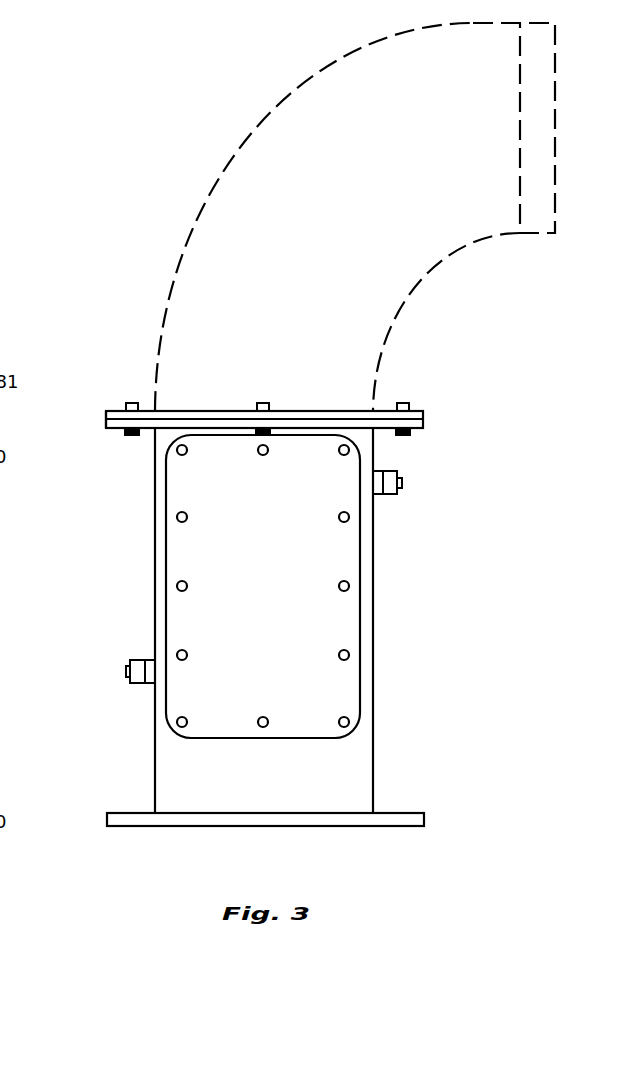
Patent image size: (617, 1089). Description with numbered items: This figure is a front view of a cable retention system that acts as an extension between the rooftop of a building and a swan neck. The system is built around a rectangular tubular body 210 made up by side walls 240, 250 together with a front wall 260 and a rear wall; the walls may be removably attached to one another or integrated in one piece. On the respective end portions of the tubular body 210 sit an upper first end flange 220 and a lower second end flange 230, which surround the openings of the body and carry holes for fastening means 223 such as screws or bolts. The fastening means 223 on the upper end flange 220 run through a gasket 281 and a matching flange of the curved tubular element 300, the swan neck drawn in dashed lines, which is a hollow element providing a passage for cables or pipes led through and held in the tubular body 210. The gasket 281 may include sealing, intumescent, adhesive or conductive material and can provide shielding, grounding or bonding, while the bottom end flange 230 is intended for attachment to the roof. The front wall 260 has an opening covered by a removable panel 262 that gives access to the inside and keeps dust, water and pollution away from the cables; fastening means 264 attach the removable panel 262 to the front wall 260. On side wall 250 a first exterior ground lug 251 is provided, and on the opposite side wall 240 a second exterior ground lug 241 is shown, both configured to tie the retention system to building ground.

The tubular body 210 is at (265, 620).
The first end flange 220 is at (423, 420).
The fastening means 223 is at (132, 402).
The second end flange 230 is at (423, 820).
The side wall 240 is at (152, 617).
The second exterior ground lug 241 is at (127, 673).
The side wall 250 is at (373, 682).
The first exterior ground lug 251 is at (402, 485).
The front wall 260 is at (197, 768).
The removable panel 262 is at (182, 553).
The fastening means 264 is at (352, 727).
The gasket 281 is at (107, 417).
The curved tubular element 300 is at (208, 243).